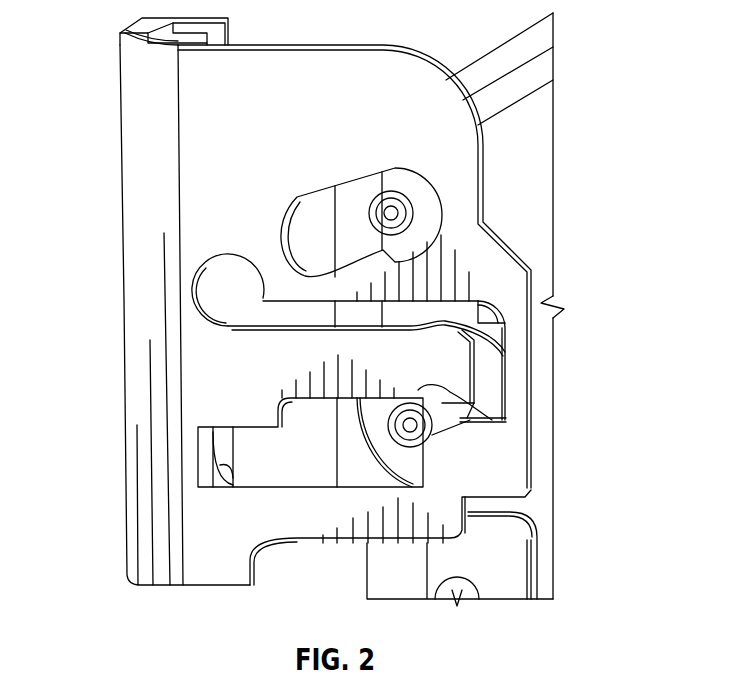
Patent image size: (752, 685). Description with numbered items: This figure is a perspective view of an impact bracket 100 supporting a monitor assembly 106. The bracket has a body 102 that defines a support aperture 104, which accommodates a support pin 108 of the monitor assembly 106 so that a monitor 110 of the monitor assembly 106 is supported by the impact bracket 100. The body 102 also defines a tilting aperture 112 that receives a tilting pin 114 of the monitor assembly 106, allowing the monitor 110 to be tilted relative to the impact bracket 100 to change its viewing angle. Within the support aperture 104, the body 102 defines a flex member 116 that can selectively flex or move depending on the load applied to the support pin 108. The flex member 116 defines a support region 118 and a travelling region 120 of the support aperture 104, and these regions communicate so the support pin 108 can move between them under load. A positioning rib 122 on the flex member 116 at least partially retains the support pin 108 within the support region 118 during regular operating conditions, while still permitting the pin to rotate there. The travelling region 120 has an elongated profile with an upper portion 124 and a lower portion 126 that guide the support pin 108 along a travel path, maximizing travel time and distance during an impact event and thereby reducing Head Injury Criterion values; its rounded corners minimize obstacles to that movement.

The impact bracket 100 is at (125, 75).
The body 102 is at (130, 183).
The support aperture 104 is at (507, 392).
The monitor assembly 106 is at (548, 149).
The support pin 108 is at (435, 435).
The monitor 110 is at (550, 230).
The tilting aperture 112 is at (300, 203).
The tilting pin 114 is at (390, 200).
The flex member 116 is at (463, 373).
The support region 118 is at (465, 420).
The travelling region 120 is at (272, 487).
The positioning rib 122 is at (420, 395).
The upper portion 124 is at (278, 420).
The lower portion 126 is at (252, 487).